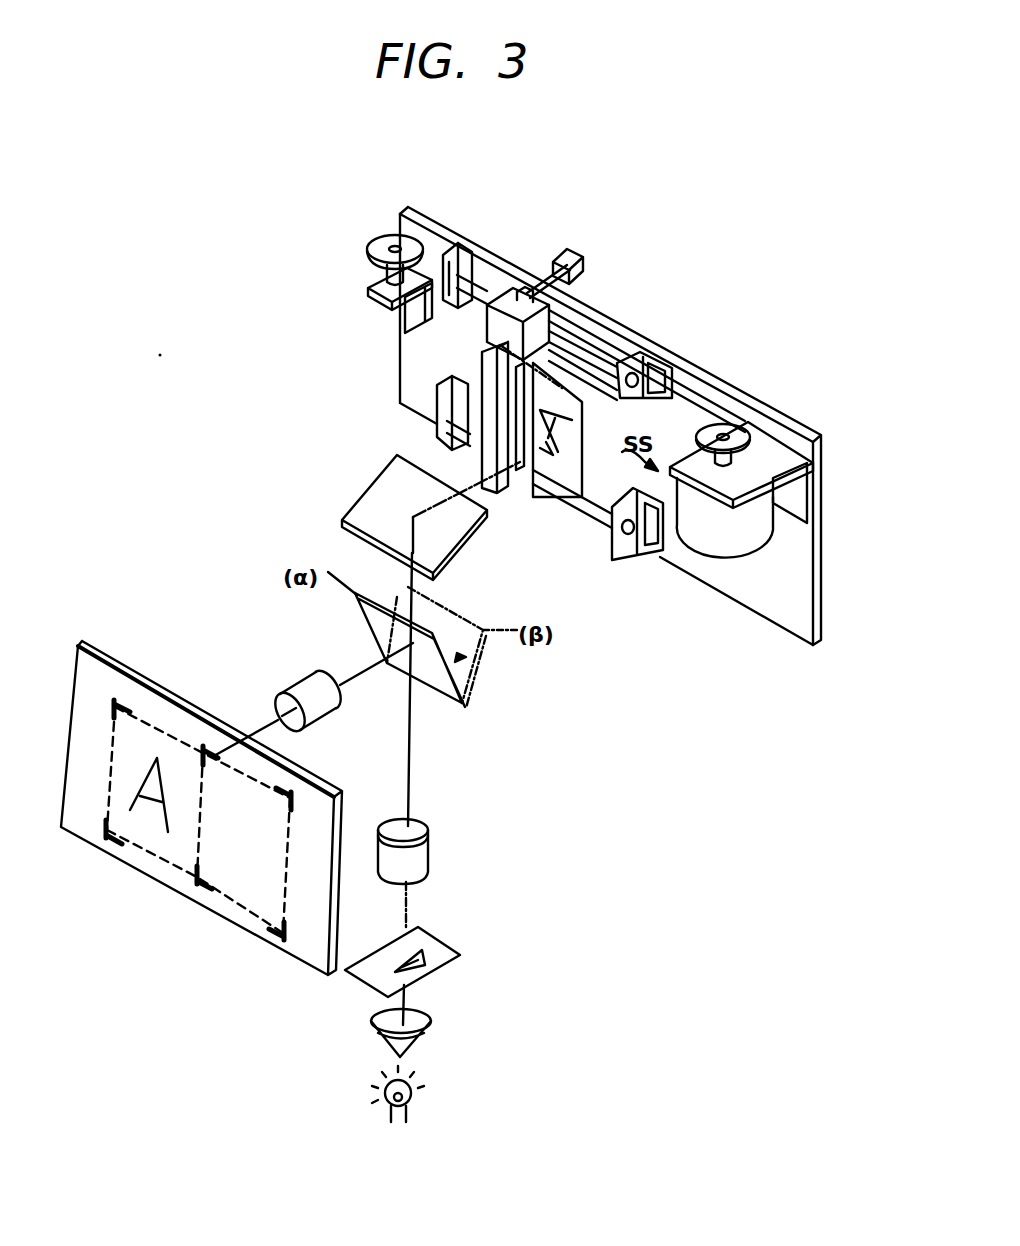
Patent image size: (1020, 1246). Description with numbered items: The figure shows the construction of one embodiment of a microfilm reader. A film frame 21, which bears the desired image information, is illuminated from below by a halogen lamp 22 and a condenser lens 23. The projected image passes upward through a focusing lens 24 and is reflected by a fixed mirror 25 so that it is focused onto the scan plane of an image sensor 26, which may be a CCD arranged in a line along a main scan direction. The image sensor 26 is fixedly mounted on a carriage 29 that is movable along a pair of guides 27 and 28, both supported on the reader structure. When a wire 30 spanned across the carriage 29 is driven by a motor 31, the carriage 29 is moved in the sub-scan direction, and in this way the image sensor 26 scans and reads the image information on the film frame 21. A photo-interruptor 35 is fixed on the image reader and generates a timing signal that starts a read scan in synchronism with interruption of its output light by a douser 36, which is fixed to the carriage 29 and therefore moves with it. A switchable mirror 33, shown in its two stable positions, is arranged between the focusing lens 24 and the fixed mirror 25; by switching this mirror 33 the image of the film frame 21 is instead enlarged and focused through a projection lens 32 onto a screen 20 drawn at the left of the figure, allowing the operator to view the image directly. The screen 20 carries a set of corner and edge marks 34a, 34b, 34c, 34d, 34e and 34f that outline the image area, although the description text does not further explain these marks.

The screen 20 is at (128, 660).
The film frame 21 is at (440, 940).
The halogen lamp 22 is at (412, 1095).
The condenser lens 23 is at (417, 1021).
The focusing lens 24 is at (420, 858).
The fixed mirror 25 is at (363, 493).
The image sensor 26 is at (480, 362).
The guide 27 is at (597, 348).
The guide 28 is at (600, 520).
The carriage 29 is at (505, 300).
The wire 30 is at (695, 395).
The motor 31 is at (722, 568).
The projection lens 32 is at (332, 716).
The switchable mirror 33 is at (362, 628).
The image corner mark 34a is at (118, 704).
The image corner mark 34b is at (105, 835).
The image corner mark 34c is at (195, 882).
The image corner mark 34d is at (200, 752).
The image corner mark 34e is at (283, 938).
The image corner mark 34f is at (295, 800).
The photo-interruptor 35 is at (585, 262).
The douser 36 is at (545, 288).